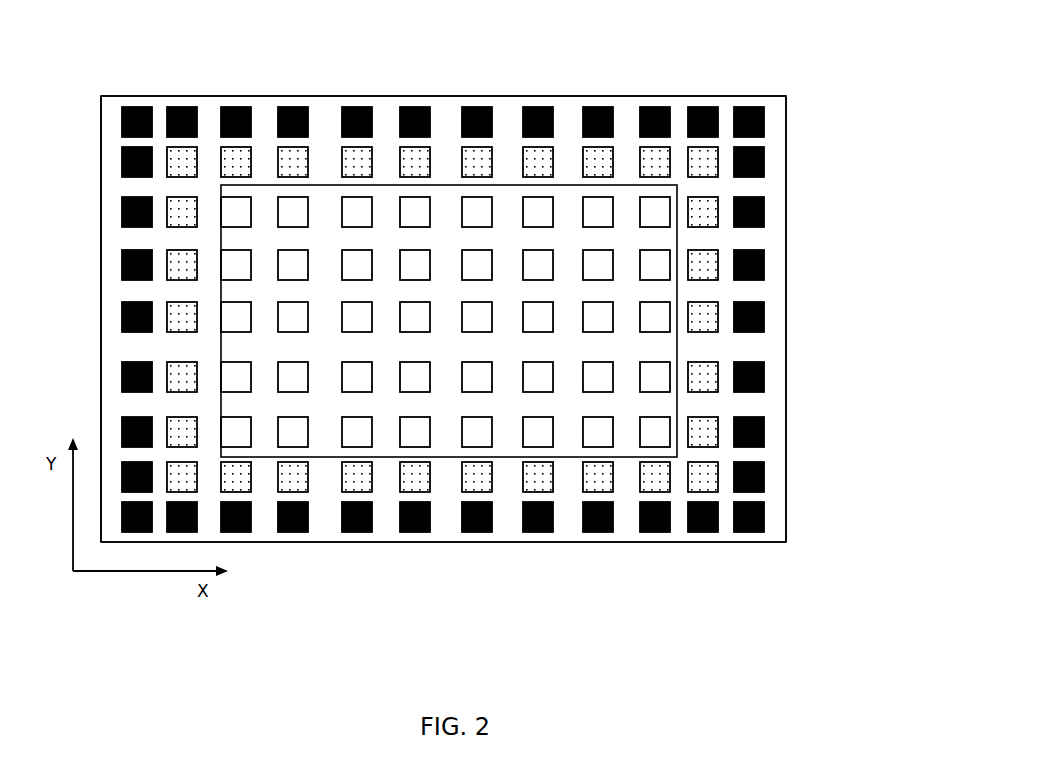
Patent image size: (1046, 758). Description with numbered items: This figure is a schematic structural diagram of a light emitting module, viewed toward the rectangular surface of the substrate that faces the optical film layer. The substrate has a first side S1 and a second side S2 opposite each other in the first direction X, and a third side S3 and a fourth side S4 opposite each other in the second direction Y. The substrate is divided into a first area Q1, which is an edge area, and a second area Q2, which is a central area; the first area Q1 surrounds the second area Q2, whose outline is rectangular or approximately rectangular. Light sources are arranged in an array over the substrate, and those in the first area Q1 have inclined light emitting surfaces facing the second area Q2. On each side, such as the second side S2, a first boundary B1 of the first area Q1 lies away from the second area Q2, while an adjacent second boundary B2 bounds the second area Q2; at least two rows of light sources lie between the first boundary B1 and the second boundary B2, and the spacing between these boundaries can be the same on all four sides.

The first side S1 is at (79, 319).
The second side S2 is at (810, 319).
The third side S3 is at (443, 79).
The fourth side S4 is at (443, 561).
The first area Q1 is at (770, 235).
The second area Q2 is at (570, 442).
The first boundary B1 is at (773, 277).
The second boundary B2 is at (698, 308).